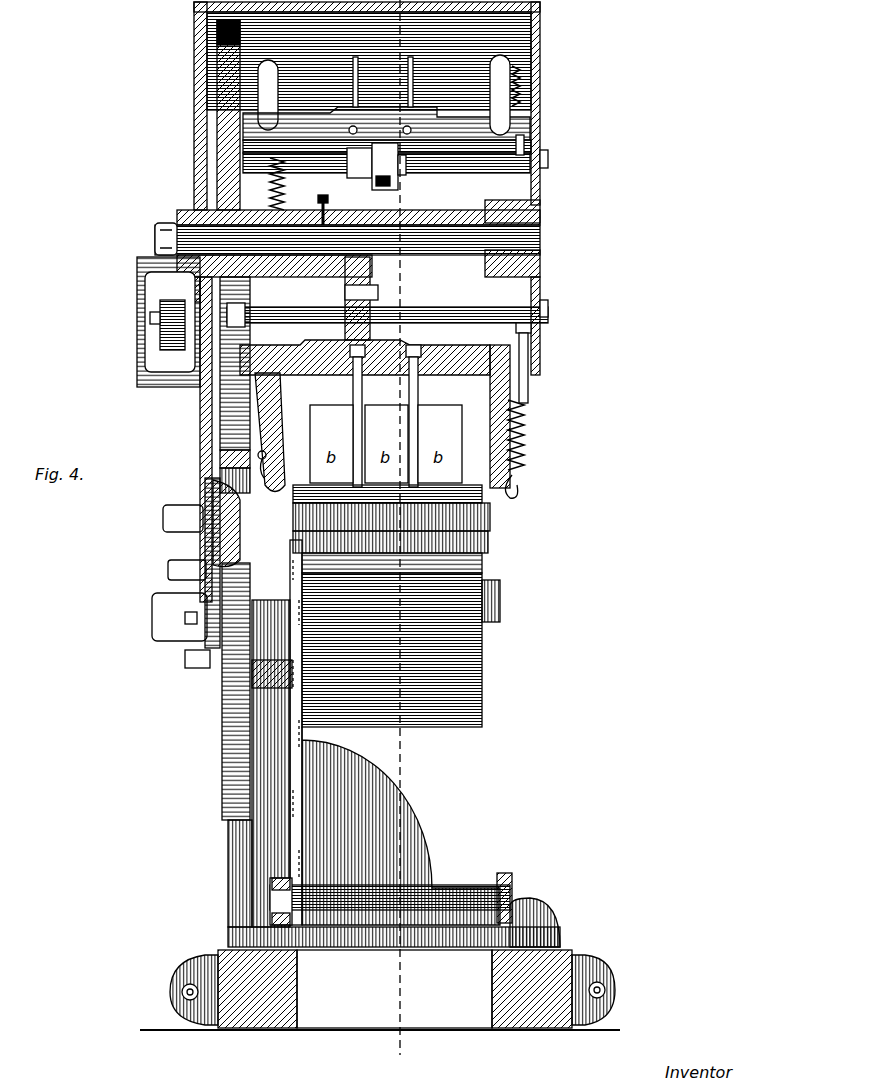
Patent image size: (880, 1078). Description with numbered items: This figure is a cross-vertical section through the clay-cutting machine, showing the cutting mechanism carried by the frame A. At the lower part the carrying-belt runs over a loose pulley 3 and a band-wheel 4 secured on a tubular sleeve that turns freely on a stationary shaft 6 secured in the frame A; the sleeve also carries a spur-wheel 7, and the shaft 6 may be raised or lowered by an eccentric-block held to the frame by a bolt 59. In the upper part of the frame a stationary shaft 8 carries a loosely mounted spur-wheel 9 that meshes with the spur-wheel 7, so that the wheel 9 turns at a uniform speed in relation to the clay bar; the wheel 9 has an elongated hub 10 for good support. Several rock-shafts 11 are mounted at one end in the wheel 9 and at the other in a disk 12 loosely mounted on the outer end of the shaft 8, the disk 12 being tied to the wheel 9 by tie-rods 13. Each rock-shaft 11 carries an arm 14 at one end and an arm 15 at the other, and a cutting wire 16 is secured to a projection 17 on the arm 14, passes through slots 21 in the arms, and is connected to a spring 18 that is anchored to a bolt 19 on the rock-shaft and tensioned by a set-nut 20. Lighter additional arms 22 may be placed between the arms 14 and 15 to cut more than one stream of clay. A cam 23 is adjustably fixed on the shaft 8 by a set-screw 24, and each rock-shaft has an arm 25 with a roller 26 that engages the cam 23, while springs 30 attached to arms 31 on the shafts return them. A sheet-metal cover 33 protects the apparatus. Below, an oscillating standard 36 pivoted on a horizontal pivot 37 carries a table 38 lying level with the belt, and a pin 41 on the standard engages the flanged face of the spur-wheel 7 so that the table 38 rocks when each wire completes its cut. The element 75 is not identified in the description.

The loose pulley 3 is at (399, 536).
The band-wheel 4 is at (392, 643).
The stationary shaft 6 is at (500, 603).
The spur-wheel 7 is at (230, 732).
The stationary shaft 8 is at (540, 237).
The spur-wheel 9 is at (207, 48).
The elongated hub 10 is at (283, 272).
The rock-shaft 11 is at (298, 123).
The disk 12 is at (542, 187).
The tie-rod 13 is at (465, 165).
The arm 14 is at (272, 115).
The arm 15 is at (515, 82).
The wire 16 is at (465, 72).
The projection 17 is at (232, 92).
The spring 18 is at (522, 100).
The bolt 19 is at (528, 380).
The set-nut 20 is at (522, 155).
The slot 21 is at (280, 483).
The additional arm 22 is at (405, 80).
The cam 23 is at (378, 281).
The set-screw 24 is at (318, 199).
The arm 25 is at (400, 170).
The roller 26 is at (350, 175).
The spring 30 is at (290, 184).
The arm 31 is at (278, 158).
The cover 33 is at (540, 36).
The oscillating standard 36 is at (302, 745).
The horizontal pivot 37 is at (417, 892).
The table 38 is at (425, 530).
The pin 41 is at (250, 685).
The bolt 59 is at (490, 530).
The pillar 75 is at (492, 385).
The frame A is at (200, 428).